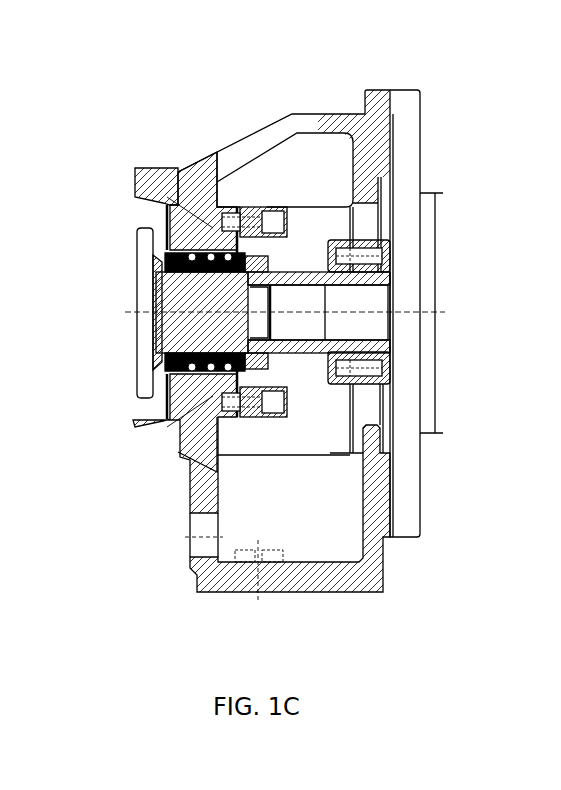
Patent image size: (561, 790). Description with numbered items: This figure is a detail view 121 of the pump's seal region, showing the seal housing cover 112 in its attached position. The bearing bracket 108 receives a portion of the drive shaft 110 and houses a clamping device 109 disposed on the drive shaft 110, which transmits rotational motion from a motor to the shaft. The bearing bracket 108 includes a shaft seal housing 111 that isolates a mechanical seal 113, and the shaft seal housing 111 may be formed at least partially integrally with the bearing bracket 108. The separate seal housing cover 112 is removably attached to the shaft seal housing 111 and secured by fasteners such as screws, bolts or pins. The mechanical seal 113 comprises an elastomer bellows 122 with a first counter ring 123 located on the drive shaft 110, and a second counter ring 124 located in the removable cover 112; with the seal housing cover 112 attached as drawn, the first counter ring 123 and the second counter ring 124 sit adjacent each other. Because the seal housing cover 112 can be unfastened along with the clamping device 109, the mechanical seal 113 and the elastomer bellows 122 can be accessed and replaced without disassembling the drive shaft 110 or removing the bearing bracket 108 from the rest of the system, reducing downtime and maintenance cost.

The bearing bracket 108 is at (196, 612).
The clamping device 109 is at (388, 362).
The drive shaft 110 is at (305, 270).
The shaft seal housing 111 is at (220, 487).
The seal housing cover 112 is at (264, 150).
The mechanical seal 113 is at (258, 243).
The detail view 121 is at (453, 73).
The elastomer bellows 122 is at (182, 255).
The first counter ring 123 is at (237, 255).
The second counter ring 124 is at (262, 205).